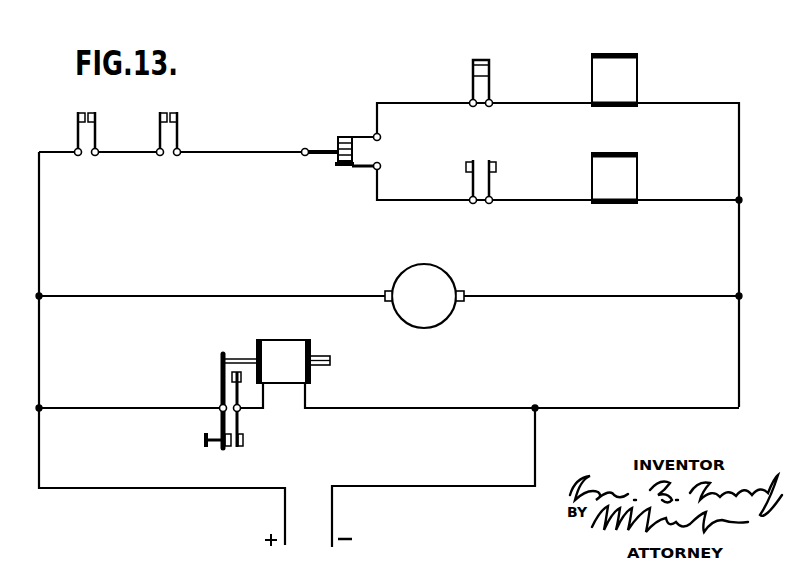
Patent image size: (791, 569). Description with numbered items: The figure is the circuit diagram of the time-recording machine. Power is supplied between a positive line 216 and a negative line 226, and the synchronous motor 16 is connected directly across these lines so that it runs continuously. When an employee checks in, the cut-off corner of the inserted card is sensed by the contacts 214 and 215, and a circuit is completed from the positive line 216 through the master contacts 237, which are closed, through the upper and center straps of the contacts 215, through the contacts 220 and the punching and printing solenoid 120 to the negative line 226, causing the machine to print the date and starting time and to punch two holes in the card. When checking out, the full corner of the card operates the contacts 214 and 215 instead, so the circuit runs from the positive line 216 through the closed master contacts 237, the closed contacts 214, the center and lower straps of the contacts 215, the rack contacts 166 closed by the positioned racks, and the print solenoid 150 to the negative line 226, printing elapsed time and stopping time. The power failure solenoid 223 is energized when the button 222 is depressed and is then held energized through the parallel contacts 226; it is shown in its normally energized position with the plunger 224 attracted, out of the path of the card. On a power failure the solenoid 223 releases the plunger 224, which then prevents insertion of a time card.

The synchronous motor 16 is at (440, 281).
The punching and printing solenoid 120 is at (623, 71).
The print solenoid 150 is at (627, 167).
The rack contacts 166 is at (486, 160).
The contacts 214 is at (178, 129).
The contacts 215 is at (358, 124).
The positive line 216 is at (40, 233).
The contacts 220 is at (487, 78).
The button 222 is at (238, 428).
The solenoid 223 is at (298, 324).
The plunger 224 is at (330, 358).
The negative line 226 is at (739, 228).
The master contacts 237 is at (96, 132).